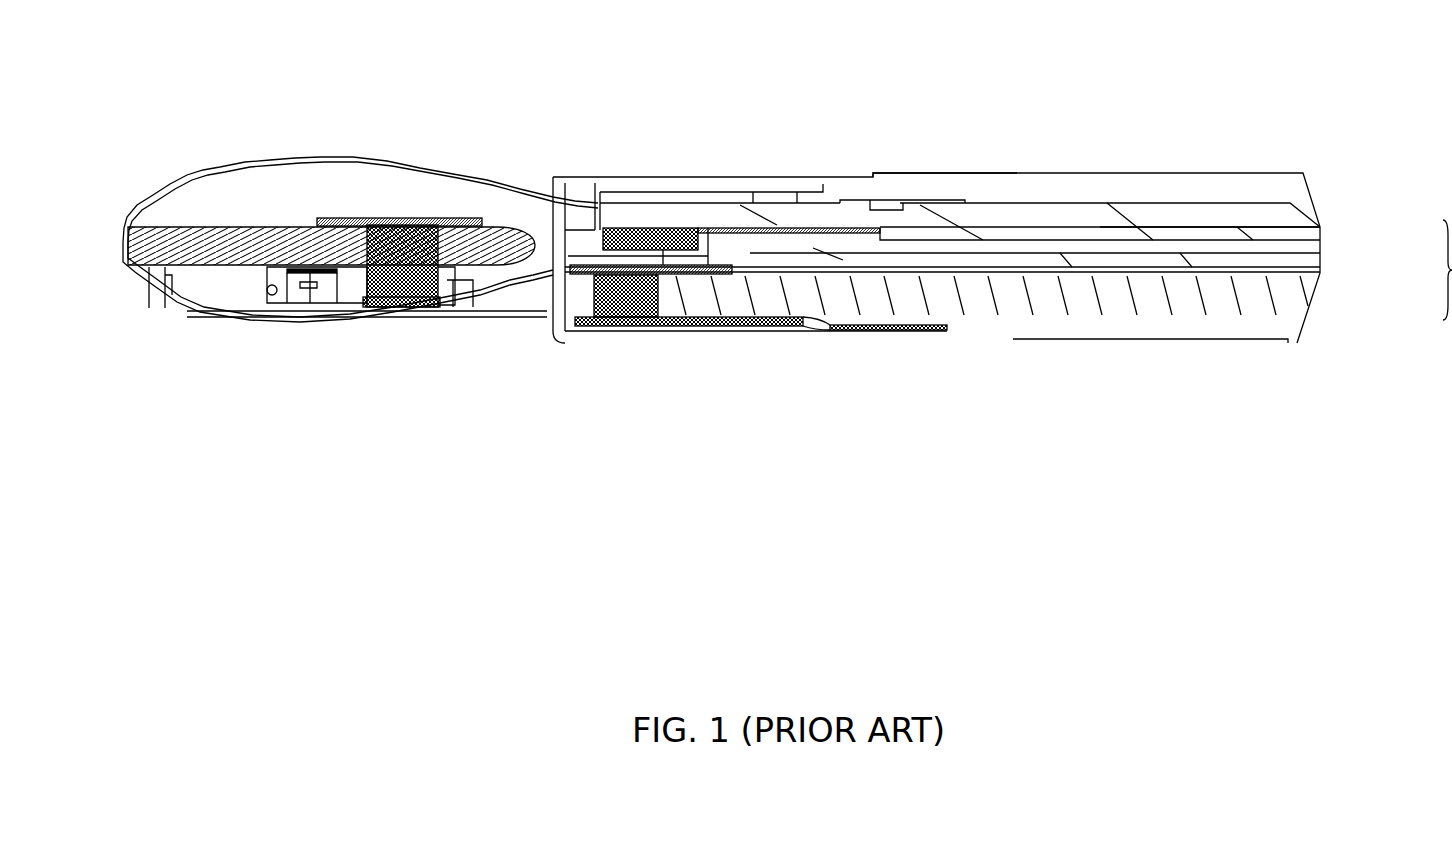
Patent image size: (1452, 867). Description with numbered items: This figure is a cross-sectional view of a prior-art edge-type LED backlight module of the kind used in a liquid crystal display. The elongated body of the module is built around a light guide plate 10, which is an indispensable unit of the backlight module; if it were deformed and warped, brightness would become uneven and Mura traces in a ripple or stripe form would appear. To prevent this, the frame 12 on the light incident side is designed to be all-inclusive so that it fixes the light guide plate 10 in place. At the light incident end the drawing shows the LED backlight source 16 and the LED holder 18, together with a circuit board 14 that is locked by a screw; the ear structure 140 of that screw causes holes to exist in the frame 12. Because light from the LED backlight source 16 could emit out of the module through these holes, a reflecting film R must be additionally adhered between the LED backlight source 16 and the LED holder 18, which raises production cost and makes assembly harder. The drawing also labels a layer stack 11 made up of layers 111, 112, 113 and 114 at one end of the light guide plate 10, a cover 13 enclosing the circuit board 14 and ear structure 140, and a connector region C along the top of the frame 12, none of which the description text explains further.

The light guide plate 10 is at (1043, 300).
The layer stack 11 is at (1447, 270).
The first layer 111 is at (1322, 248).
The second layer 112 is at (1322, 256).
The third layer 113 is at (1322, 263).
The fourth layer 114 is at (1322, 272).
The frame 12 is at (705, 340).
The housing cover 13 is at (218, 167).
The circuit board 14 is at (225, 250).
The ear structure 140 is at (350, 222).
The LED backlight source 16 is at (630, 327).
The LED holder 18 is at (582, 257).
The reflecting film R is at (725, 265).
The connector C is at (912, 177).